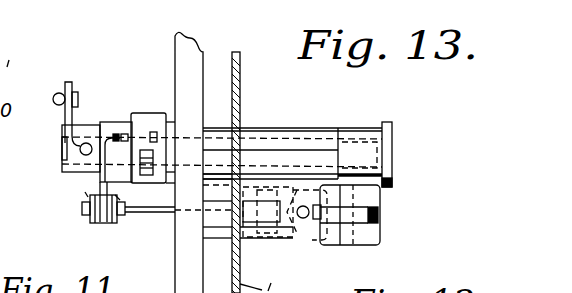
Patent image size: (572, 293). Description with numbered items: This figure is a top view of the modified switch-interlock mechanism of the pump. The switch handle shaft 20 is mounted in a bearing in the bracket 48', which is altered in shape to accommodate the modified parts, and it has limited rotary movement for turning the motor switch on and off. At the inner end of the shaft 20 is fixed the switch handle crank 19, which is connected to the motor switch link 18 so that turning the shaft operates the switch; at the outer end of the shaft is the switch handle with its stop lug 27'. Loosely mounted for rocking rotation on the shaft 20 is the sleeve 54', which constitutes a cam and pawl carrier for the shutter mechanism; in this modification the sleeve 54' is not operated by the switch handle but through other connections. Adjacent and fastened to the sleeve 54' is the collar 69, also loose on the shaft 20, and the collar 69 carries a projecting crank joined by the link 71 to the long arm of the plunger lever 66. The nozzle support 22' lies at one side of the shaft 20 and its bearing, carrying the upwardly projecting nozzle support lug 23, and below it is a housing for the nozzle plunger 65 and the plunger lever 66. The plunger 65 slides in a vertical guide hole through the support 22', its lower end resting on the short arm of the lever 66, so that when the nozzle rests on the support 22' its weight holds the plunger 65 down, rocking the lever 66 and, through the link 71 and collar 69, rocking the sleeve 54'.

The link 18 is at (59, 94).
The switch handle crank 19 is at (67, 120).
The switch handle shaft 20 is at (62, 153).
The collar 69 is at (107, 128).
The sleeve 54' is at (153, 127).
The link 71 is at (102, 183).
The plunger lever 66 is at (142, 215).
The bracket 48' is at (167, 162).
The stop lug 27' is at (320, 154).
The nozzle support lug 23 is at (359, 220).
The nozzle support 22' is at (303, 233).
The nozzle plunger 65 is at (303, 219).